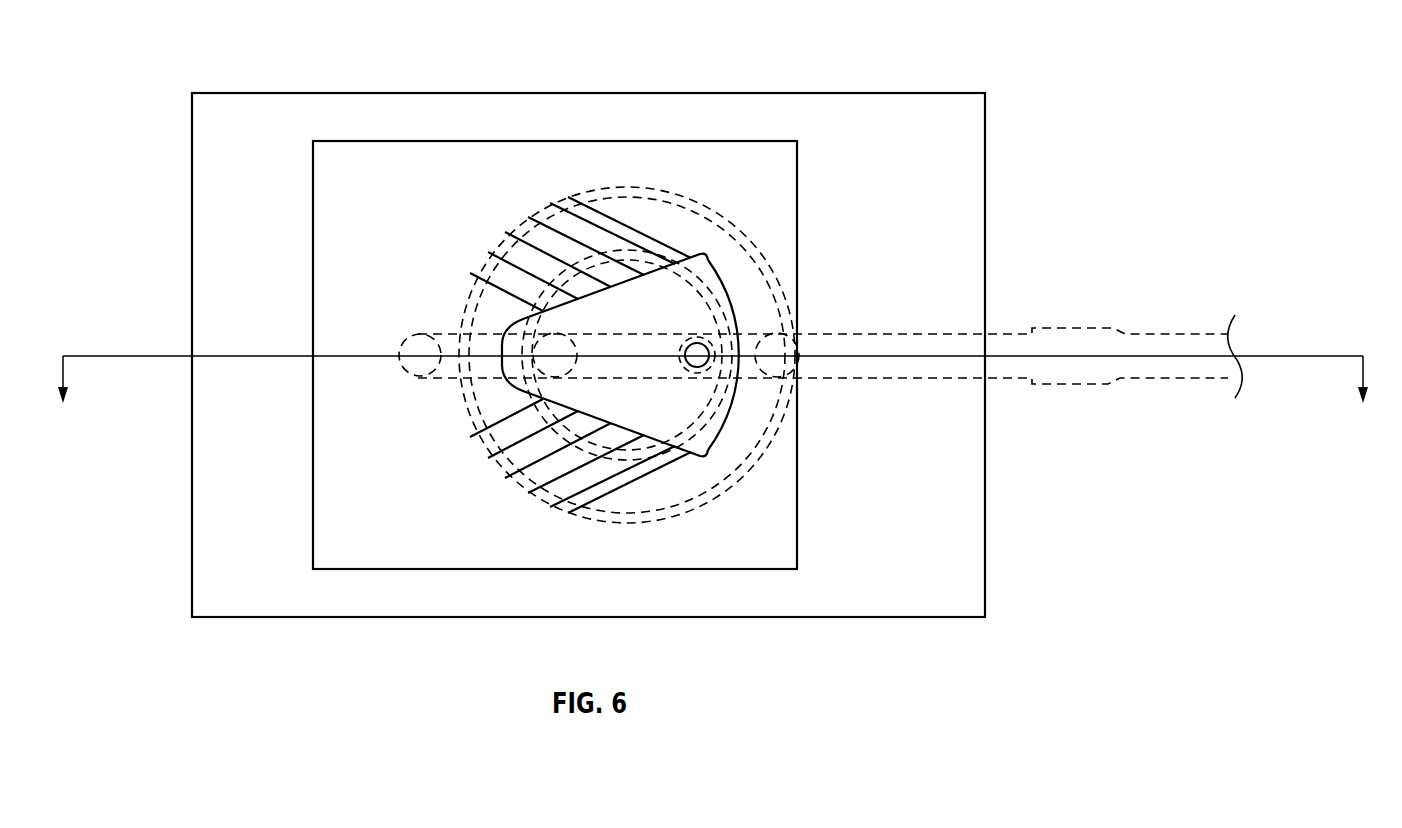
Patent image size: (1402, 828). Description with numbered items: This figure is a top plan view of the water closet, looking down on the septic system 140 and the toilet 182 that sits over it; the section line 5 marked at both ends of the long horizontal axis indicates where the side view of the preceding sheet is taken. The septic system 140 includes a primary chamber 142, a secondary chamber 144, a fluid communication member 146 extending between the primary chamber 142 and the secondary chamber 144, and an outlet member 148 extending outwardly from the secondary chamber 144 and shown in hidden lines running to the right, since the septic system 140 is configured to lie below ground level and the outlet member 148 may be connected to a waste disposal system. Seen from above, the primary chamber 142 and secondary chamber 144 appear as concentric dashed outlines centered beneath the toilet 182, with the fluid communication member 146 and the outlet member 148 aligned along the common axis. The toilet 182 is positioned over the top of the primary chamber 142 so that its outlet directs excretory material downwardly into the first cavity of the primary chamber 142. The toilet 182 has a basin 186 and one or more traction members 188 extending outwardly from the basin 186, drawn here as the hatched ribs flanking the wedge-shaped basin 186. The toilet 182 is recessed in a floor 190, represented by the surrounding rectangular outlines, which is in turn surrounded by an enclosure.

The septic system 140 is at (249, 54).
The floor 190 is at (864, 93).
The secondary chamber 144 is at (690, 200).
The primary chamber 142 is at (575, 447).
The toilet 182 is at (706, 258).
The basin 186 is at (712, 455).
The traction members 188 is at (622, 490).
The fluid communication member 146 is at (445, 380).
The outlet member 148 is at (903, 334).
The section line 5- 5 is at (715, 395).